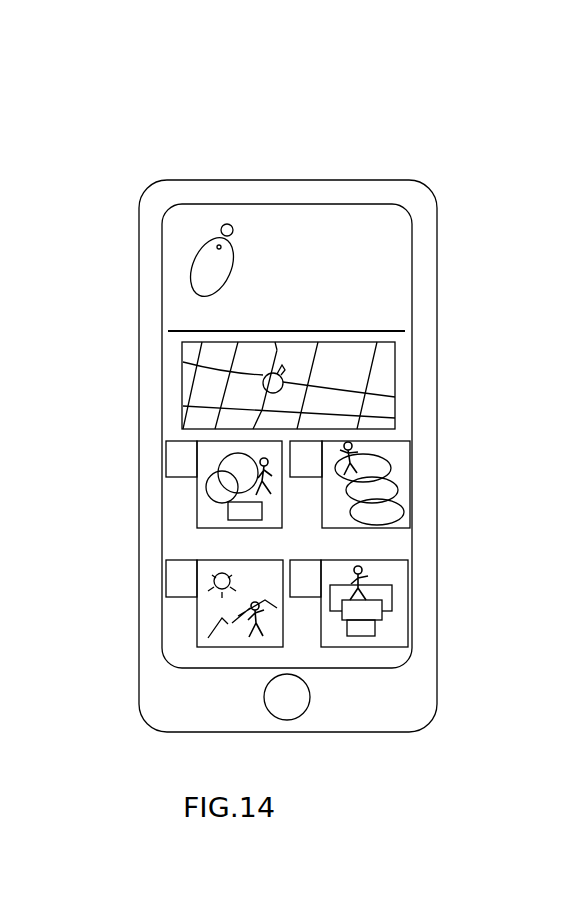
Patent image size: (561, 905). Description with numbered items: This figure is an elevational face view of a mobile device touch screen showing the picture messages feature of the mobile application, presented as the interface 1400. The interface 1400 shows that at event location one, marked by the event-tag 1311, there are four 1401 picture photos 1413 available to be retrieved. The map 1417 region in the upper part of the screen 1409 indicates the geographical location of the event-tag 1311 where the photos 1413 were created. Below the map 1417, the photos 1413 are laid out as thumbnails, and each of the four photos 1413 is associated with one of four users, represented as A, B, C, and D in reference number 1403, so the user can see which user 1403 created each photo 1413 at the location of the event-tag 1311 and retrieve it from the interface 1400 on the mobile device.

The picture message interface 1400 is at (122, 135).
The display screen 1409 is at (388, 223).
The four picture photos indication 1401 is at (177, 300).
The map of event location 1417 is at (393, 378).
The event-tag 1311 is at (285, 368).
The users A, B, C, and D 1403 is at (305, 478).
The picture photos 1413 is at (280, 635).